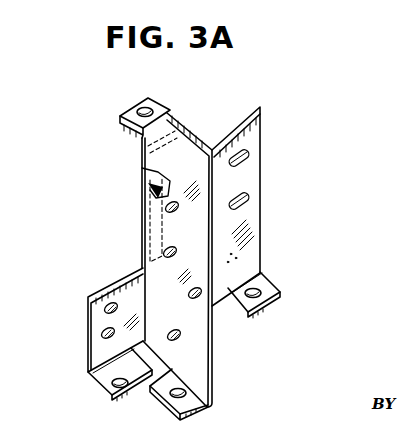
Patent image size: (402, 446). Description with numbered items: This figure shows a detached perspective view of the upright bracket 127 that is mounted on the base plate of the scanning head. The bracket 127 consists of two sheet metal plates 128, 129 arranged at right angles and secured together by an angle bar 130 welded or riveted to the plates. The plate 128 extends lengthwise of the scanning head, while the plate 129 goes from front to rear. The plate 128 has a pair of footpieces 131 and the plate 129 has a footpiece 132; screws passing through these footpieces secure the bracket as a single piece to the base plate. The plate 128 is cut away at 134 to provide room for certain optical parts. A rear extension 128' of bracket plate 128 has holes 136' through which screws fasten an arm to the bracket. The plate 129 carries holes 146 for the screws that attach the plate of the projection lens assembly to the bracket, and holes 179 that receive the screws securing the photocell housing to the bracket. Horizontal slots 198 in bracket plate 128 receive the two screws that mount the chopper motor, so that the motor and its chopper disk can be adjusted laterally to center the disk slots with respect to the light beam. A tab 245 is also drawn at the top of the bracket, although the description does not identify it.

The bracket 127 is at (102, 223).
The plate 128 is at (264, 206).
The rear extension 128' is at (90, 320).
The plate 129 is at (206, 355).
The angle bar 130 is at (148, 183).
The footpieces 131 is at (266, 287).
The footpiece 132 is at (180, 411).
The cutaway 134 is at (143, 270).
The holes 136' is at (79, 321).
The holes 146 is at (181, 310).
The holes 179 is at (172, 251).
The horizontal slots 198 is at (250, 200).
The top tab 245 is at (140, 105).